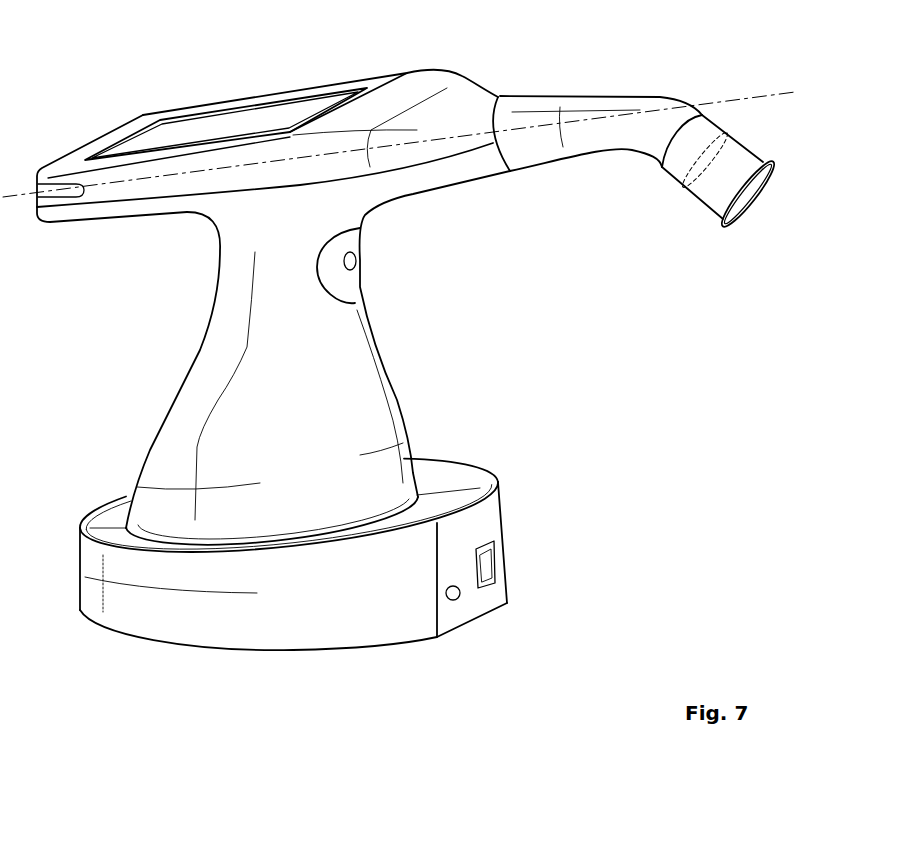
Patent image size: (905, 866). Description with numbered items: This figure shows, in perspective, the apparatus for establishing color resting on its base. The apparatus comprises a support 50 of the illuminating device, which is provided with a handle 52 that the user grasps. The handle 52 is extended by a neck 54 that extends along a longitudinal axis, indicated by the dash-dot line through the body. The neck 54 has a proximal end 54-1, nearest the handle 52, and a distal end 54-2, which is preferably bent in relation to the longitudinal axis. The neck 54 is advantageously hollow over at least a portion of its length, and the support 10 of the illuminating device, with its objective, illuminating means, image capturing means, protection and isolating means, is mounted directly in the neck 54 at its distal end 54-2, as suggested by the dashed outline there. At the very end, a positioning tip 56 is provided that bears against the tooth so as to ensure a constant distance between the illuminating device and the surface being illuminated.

The support 10 is at (685, 162).
The support 50 is at (663, 153).
The handle 52 is at (167, 457).
The neck 54 is at (653, 110).
The proximal end 54-1 is at (590, 125).
The distal end 54-2 is at (763, 157).
The positioning tip 56 is at (737, 224).